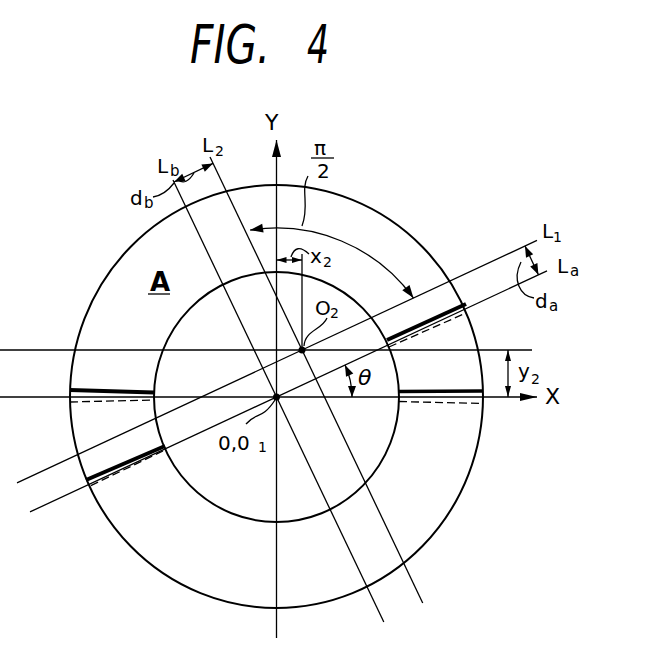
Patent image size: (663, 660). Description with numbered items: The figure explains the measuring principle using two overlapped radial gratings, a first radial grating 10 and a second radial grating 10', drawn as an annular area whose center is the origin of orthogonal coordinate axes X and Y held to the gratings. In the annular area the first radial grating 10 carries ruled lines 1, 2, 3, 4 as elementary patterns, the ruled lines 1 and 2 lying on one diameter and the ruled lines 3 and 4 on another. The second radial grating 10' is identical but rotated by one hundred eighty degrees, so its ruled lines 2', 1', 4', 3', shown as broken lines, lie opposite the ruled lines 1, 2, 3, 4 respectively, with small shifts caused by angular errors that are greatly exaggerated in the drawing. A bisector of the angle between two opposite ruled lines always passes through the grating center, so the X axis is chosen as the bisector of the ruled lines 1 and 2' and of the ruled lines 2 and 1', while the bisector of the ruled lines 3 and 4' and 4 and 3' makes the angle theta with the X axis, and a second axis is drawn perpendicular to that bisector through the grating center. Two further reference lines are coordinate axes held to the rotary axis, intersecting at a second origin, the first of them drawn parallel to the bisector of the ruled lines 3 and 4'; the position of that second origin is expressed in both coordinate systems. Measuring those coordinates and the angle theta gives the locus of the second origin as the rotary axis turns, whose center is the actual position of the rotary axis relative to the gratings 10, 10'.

The first radial grating 10 is at (276, 383).
The second radial grating 10' is at (276, 397).
The ruled line 1 is at (450, 386).
The ruled line 2 is at (102, 382).
The ruled line 3 is at (432, 309).
The ruled line 4 is at (114, 466).
The ruled line 1' is at (103, 411).
The ruled line 2' is at (453, 414).
The ruled line 3' is at (117, 485).
The ruled line 4' is at (442, 327).